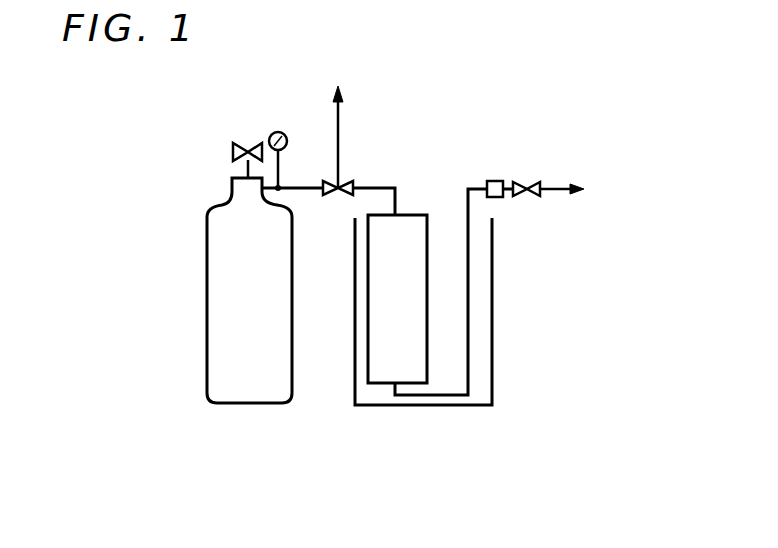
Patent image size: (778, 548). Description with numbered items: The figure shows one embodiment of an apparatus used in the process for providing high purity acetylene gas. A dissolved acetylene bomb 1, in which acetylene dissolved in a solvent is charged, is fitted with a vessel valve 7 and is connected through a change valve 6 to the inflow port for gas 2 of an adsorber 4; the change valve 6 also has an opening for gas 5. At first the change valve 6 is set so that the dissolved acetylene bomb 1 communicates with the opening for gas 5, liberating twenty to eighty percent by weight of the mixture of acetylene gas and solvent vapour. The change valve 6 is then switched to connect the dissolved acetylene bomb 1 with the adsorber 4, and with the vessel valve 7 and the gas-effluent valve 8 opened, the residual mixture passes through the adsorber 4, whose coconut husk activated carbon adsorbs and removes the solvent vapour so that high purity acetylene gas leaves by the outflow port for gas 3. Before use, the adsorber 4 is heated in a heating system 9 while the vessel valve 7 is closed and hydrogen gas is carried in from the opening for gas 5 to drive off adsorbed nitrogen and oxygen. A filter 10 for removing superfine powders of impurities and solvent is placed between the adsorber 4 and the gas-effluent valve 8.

The dissolved acetylene bomb 1 is at (222, 393).
The inflow port for gas 2 is at (417, 206).
The outflow port for gas 3 is at (478, 182).
The adsorber 4 is at (385, 375).
The opening for gas 5 is at (338, 110).
The change valve 6 is at (350, 183).
The vessel valve 7 is at (240, 143).
The gas-effluent valve 8 is at (540, 188).
The heating system 9 is at (492, 353).
The filter 10 is at (497, 197).